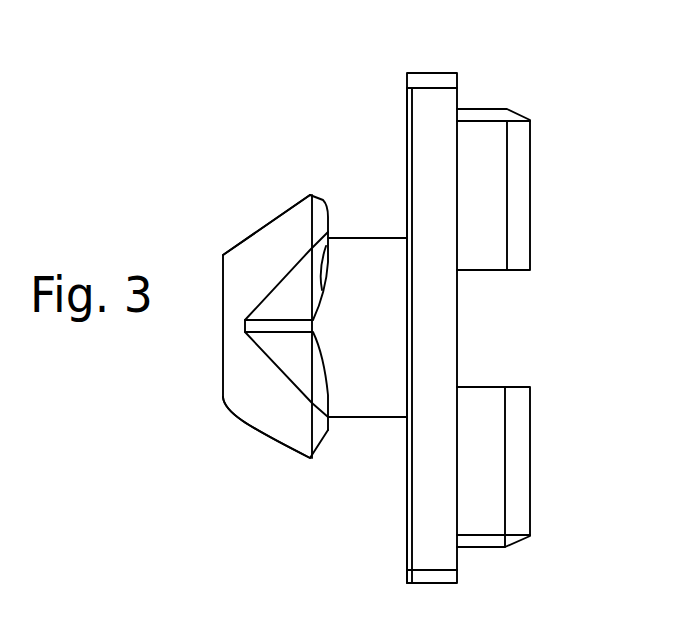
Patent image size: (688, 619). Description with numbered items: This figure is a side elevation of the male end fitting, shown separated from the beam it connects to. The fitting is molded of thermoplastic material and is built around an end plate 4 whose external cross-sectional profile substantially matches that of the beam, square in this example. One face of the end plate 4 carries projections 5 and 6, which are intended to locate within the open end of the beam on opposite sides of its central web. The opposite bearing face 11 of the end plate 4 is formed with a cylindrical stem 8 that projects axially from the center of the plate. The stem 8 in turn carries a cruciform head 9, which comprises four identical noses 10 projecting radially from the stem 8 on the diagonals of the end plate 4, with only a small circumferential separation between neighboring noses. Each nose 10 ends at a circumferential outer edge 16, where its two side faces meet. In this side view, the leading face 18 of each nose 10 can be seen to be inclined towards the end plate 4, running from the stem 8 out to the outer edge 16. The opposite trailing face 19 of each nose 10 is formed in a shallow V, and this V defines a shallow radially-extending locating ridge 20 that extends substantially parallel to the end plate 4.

The end plate 4 is at (433, 97).
The projection 5 is at (522, 184).
The projection 6 is at (518, 455).
The cylindrical stem 8 is at (367, 397).
The cruciform head 9 is at (256, 443).
The nose 10 is at (288, 232).
The bearing face 11 is at (408, 100).
The outer edge 16 is at (308, 212).
The leading face 18 is at (272, 243).
The trailing face 19 is at (323, 370).
The locating ridge 20 is at (336, 242).